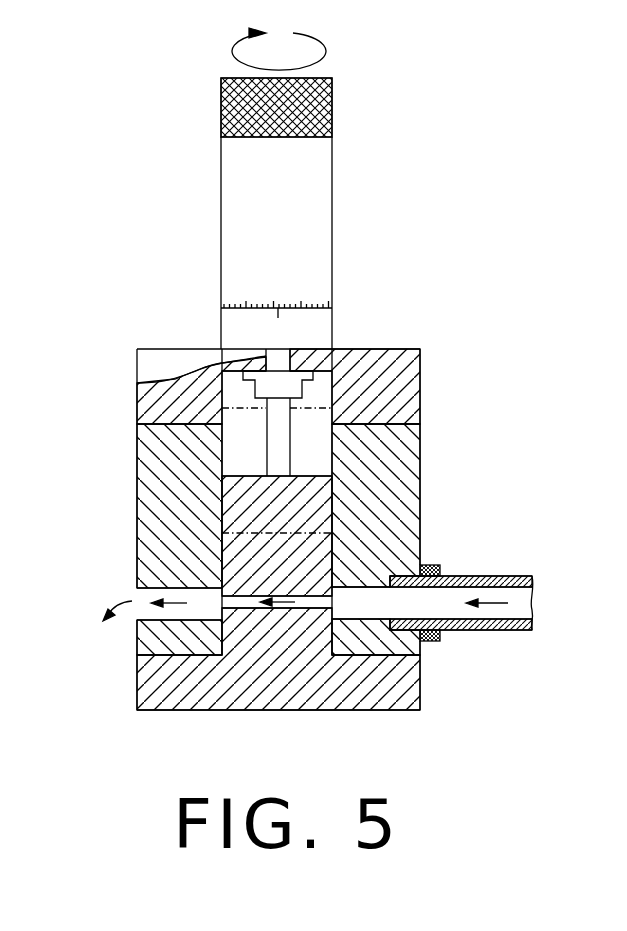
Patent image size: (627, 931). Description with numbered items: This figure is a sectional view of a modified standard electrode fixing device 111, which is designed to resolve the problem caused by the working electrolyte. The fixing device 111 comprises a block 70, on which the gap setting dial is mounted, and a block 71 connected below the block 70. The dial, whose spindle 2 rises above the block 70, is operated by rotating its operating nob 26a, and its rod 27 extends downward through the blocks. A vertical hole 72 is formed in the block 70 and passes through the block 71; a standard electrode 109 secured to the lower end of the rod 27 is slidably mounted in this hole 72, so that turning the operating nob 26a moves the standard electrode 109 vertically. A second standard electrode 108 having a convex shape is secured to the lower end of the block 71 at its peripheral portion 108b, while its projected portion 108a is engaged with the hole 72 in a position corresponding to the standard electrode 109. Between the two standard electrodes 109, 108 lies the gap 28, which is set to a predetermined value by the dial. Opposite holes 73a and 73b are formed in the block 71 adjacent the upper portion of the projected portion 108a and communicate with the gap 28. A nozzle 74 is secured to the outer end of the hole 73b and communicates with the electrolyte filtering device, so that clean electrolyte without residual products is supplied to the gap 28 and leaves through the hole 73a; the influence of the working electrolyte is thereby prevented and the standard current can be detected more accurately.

The operating nob 26a is at (332, 117).
The adjusting spindle with scale 2 is at (318, 227).
The standard electrode fixing device 111 is at (470, 326).
The block 70 is at (388, 358).
The rod 27 is at (289, 453).
The vertical hole 72 is at (222, 455).
The block 71 is at (405, 483).
The standard electrode 109 is at (233, 560).
The gap 28 is at (301, 604).
The hole 73a is at (152, 613).
The hole 73b is at (375, 610).
The nozzle 74 is at (407, 572).
The projected portion 108a is at (225, 630).
The standard electrode 108 is at (257, 688).
The peripheral portion 108b is at (402, 682).